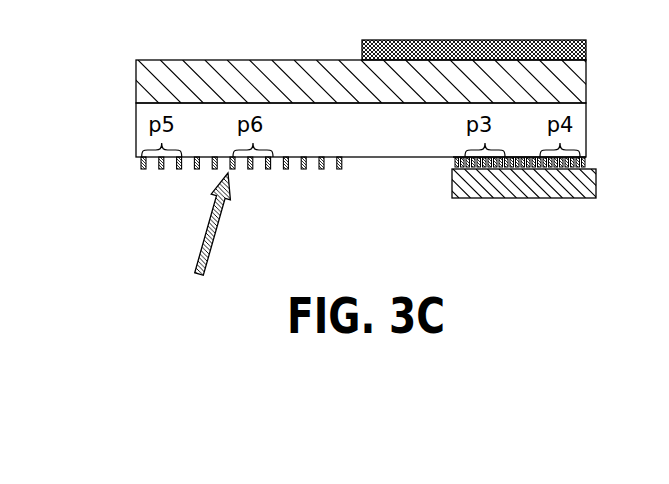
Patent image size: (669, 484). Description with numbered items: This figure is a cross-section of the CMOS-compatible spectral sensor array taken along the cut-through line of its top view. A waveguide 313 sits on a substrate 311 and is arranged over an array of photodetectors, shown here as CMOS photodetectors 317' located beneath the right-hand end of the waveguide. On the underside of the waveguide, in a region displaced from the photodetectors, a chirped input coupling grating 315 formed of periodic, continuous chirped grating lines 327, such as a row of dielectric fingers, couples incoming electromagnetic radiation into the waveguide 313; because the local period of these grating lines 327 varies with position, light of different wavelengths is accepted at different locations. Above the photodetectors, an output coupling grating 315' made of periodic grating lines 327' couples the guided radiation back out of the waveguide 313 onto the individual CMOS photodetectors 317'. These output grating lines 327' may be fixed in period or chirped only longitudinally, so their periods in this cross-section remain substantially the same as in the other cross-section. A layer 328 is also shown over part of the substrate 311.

The substrate 311 is at (124, 80).
The upper layer 328 is at (448, 39).
The waveguide 313 is at (122, 130).
The chirped input coupling grating 315 is at (160, 224).
The chirped grating lines 327 is at (241, 197).
The output coupling grating 315' is at (484, 197).
The grating lines 327' is at (553, 188).
The CMOS photodetectors 317' is at (525, 204).